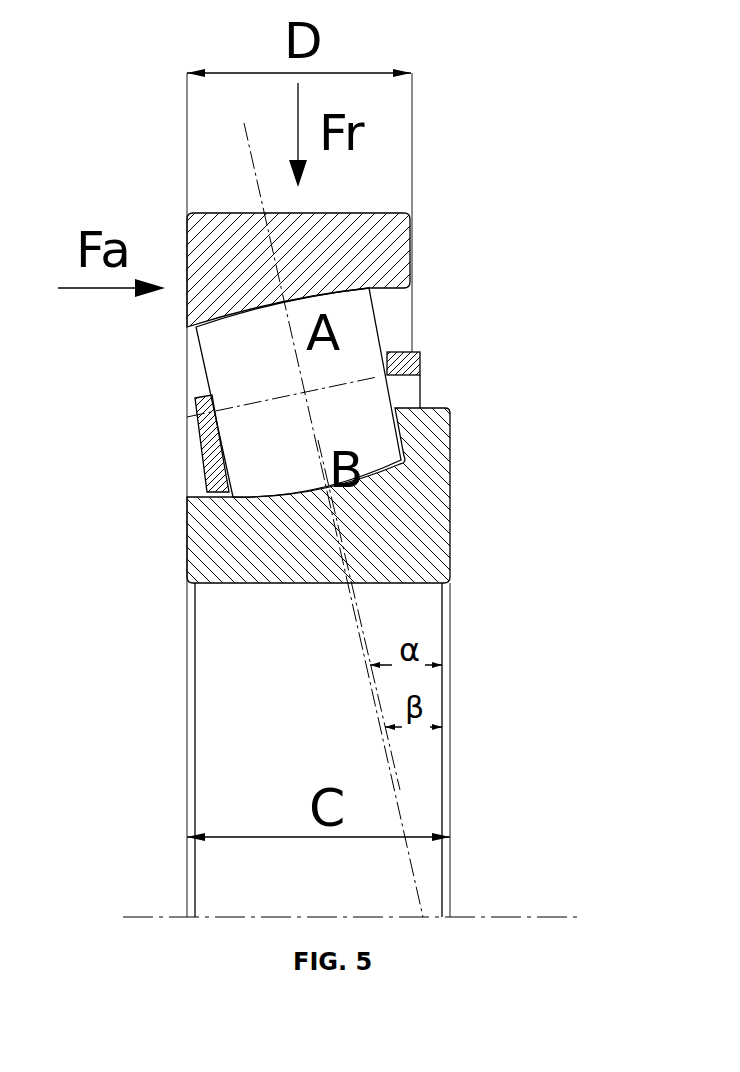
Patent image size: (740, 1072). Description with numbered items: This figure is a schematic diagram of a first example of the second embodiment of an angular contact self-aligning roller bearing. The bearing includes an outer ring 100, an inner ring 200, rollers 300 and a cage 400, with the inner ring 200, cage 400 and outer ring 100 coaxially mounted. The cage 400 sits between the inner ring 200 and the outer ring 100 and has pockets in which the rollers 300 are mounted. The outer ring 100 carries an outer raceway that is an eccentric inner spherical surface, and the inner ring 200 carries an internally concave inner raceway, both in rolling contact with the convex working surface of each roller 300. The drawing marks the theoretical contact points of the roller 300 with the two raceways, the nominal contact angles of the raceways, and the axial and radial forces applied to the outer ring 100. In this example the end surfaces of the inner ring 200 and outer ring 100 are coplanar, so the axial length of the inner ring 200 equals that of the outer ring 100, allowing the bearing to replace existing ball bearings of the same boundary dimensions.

The outer ring 100 is at (355, 265).
The inner ring 200 is at (293, 538).
The roller 300 is at (295, 425).
The cage 400 is at (415, 357).